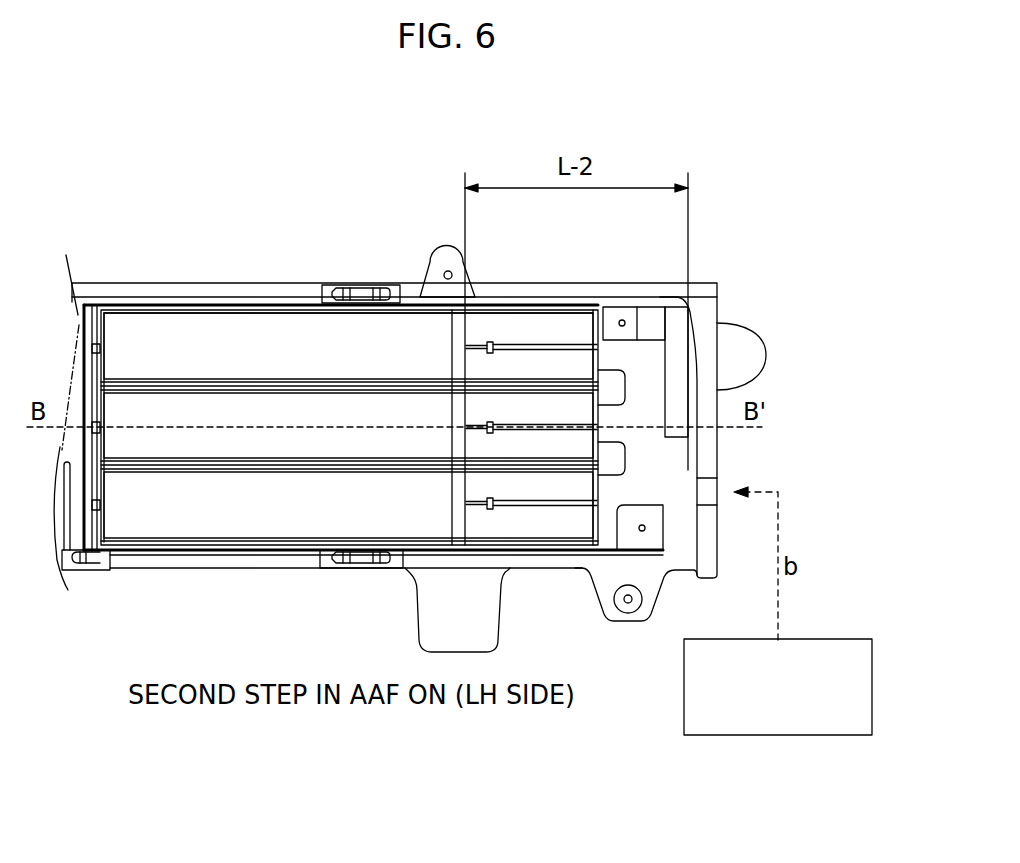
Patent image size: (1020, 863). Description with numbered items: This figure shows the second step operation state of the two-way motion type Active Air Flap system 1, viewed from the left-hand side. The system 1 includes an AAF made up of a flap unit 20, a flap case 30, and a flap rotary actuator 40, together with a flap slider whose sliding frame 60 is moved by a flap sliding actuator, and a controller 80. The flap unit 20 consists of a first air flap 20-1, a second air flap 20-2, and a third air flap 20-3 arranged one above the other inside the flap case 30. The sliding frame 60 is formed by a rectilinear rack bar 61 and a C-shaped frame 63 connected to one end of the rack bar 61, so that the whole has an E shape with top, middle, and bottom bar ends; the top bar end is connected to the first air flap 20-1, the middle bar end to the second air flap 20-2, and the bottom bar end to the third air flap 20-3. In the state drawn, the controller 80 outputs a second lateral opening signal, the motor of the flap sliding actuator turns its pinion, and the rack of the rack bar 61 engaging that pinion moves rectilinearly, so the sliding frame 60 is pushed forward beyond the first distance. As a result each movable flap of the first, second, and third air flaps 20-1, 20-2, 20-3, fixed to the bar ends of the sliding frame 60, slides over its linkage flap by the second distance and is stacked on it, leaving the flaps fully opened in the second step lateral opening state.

The Active Air Flap (AAF) system 1 is at (757, 193).
The flap unit 20 is at (345, 340).
The first air flap 20-1 is at (224, 340).
The second air flap 20-2 is at (257, 418).
The third air flap 20-3 is at (245, 513).
The flap case 30 is at (118, 284).
The flap rotary actuator 40 is at (347, 560).
The sliding frame 60 is at (577, 448).
The rack bar 61 is at (515, 422).
The C-shaped frame 63 is at (568, 347).
The controller 80 is at (755, 735).